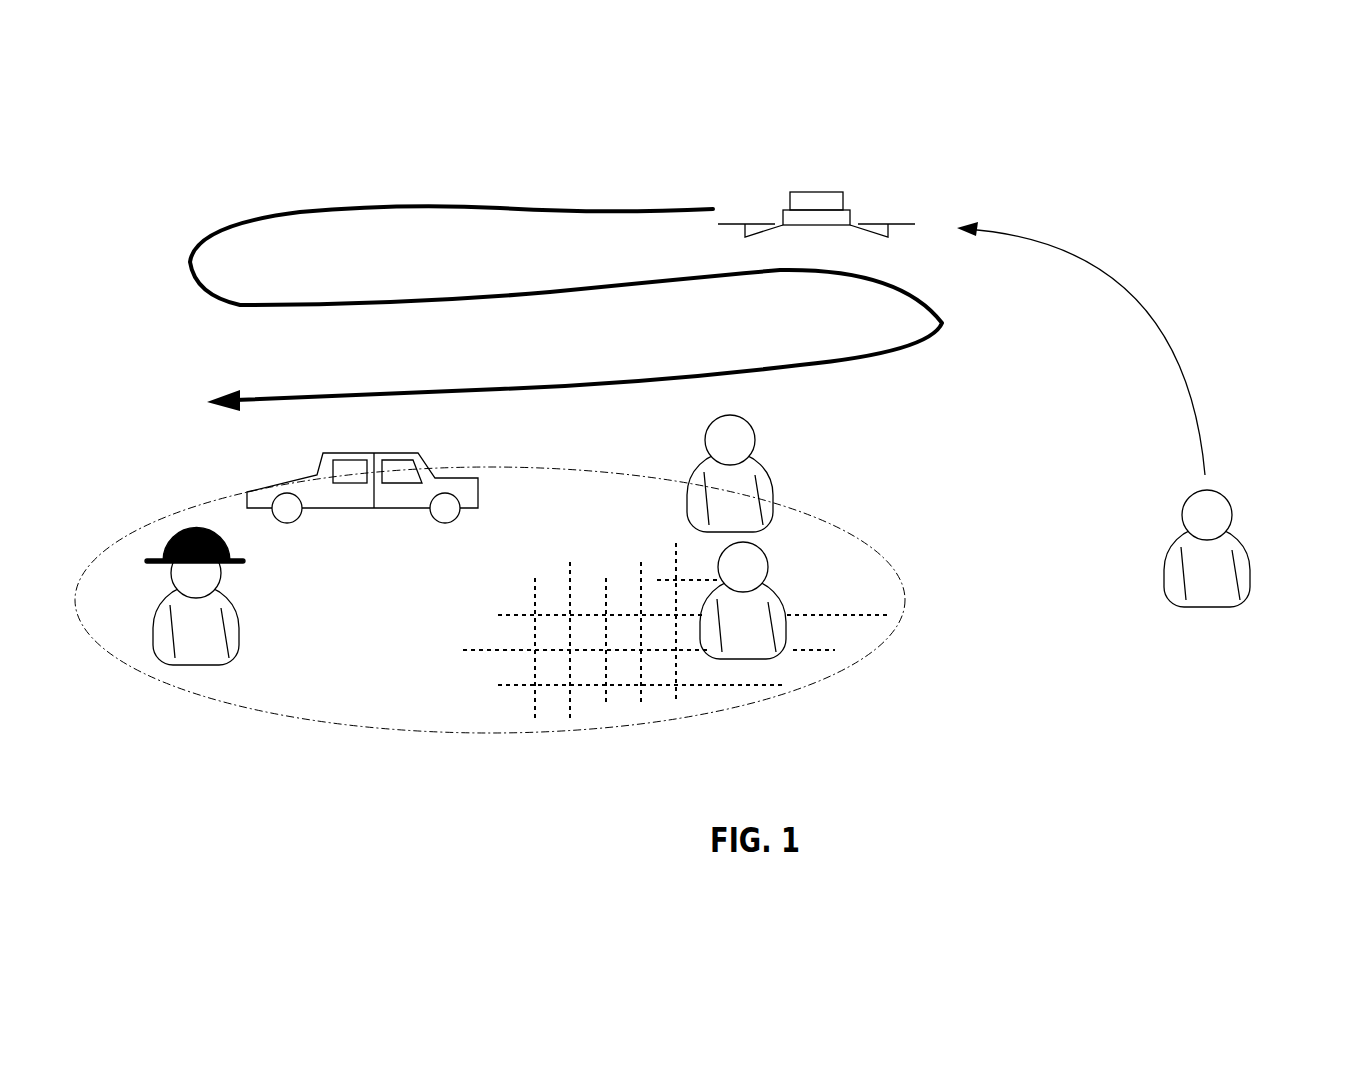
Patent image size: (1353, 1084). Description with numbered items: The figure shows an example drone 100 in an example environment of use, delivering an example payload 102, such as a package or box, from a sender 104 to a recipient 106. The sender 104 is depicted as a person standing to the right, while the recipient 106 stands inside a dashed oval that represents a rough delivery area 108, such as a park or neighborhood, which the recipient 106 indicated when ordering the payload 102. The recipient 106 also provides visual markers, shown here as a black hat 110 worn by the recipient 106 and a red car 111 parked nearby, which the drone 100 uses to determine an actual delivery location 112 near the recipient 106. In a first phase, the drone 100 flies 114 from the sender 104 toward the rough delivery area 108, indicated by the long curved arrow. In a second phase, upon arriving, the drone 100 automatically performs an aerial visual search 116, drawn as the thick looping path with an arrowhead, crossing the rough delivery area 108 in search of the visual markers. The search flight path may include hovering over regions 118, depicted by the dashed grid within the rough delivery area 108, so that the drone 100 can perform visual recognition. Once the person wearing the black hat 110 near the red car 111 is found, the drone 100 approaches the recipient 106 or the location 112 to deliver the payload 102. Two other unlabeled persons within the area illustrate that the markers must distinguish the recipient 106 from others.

The drone 100 is at (898, 174).
The payload 102 is at (818, 192).
The sender 104 is at (1248, 552).
The recipient 106 is at (240, 610).
The rough delivery area 108 is at (847, 537).
The black hat 110 is at (188, 530).
The red car 111 is at (265, 485).
The actual delivery location 112 is at (178, 678).
The flight to rough delivery area 114 is at (1133, 298).
The aerial visual search 116 is at (215, 235).
The regions 118 is at (543, 624).